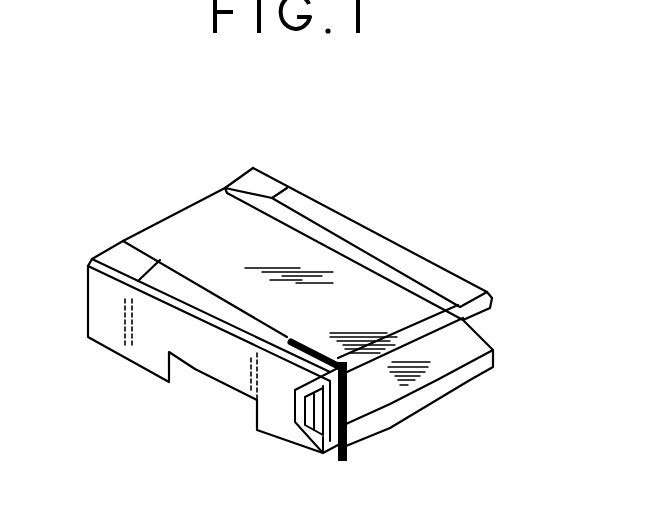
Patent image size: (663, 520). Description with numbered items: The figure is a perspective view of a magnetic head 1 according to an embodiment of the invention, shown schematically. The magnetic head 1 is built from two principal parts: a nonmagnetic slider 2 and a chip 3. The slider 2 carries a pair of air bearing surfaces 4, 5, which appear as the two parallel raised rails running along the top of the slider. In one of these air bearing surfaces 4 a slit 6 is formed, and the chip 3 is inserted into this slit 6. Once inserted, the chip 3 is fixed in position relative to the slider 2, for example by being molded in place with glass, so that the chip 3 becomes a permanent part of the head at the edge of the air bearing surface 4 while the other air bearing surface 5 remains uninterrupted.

The magnetic head 1 is at (468, 230).
The nonmagnetic slider 2 is at (208, 222).
The chip 3 is at (345, 414).
The air bearing surface 4 is at (173, 276).
The air bearing surface 5 is at (345, 228).
The slit 6 is at (287, 343).